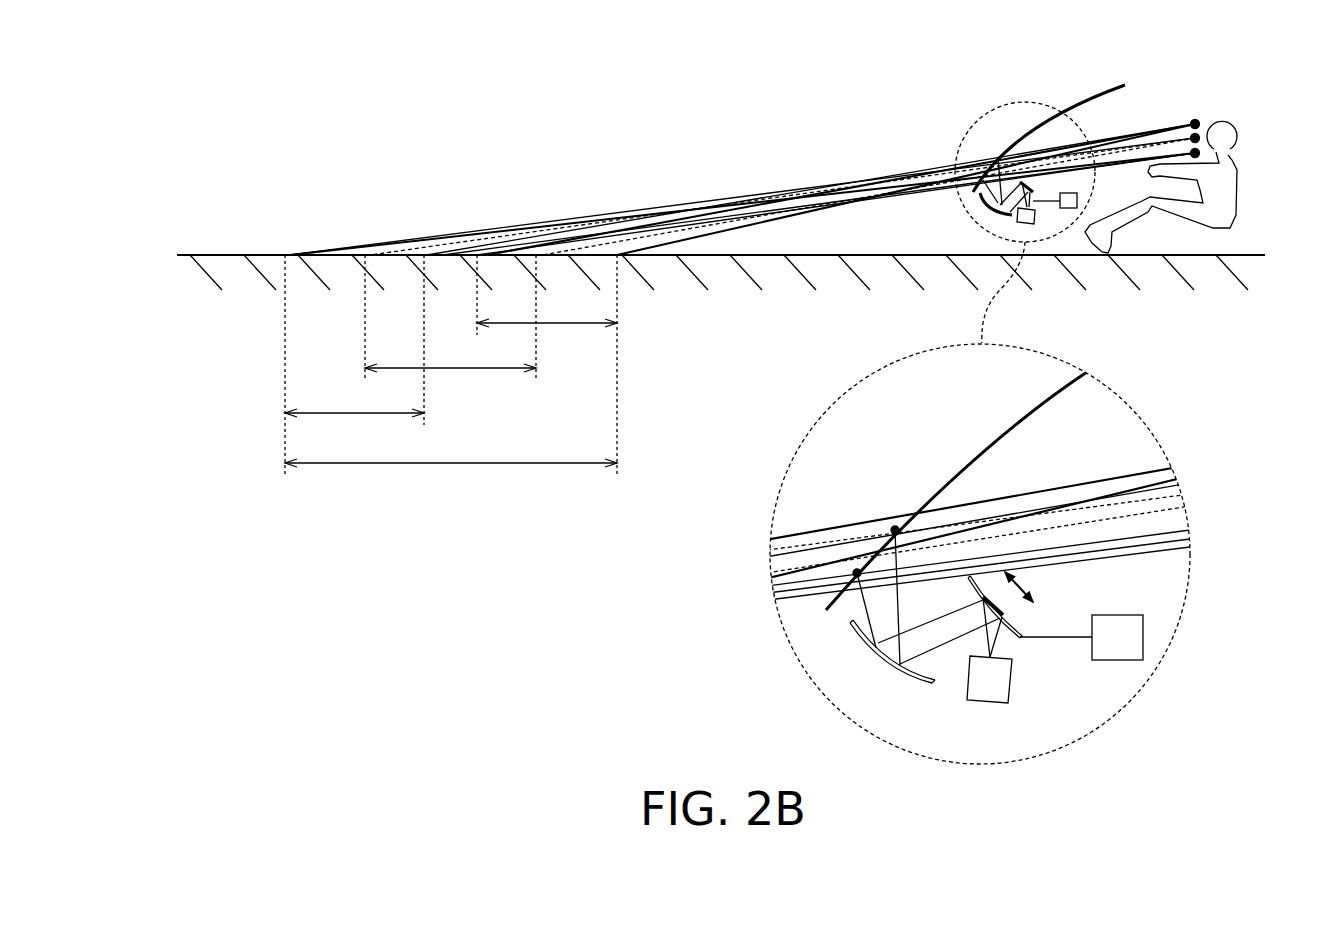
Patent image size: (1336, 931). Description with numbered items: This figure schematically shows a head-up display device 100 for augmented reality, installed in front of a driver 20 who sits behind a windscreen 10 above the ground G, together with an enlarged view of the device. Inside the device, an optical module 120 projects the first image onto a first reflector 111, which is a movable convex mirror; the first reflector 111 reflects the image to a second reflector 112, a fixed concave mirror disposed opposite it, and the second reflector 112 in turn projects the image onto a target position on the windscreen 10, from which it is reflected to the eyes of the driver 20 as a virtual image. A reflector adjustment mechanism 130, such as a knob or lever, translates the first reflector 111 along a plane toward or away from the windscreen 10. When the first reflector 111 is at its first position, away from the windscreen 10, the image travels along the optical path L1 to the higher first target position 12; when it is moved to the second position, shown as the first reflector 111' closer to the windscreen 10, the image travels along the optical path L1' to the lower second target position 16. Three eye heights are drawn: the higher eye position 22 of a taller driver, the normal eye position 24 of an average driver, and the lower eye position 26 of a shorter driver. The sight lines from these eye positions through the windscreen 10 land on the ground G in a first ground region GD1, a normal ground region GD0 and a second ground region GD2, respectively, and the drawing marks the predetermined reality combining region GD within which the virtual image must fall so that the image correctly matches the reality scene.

The windscreen 10 is at (1090, 97).
The first target position 12 is at (893, 528).
The second target position 16 is at (857, 572).
The driver 20 is at (1243, 168).
The higher eye position 22 is at (1195, 124).
The normal eye position 24 is at (1195, 138).
The lower eye position 26 is at (1195, 153).
The head-up display device 100 is at (1230, 411).
The first reflector 111 is at (1038, 607).
The first reflector at second position 111' is at (1045, 577).
The second reflector 112 is at (882, 662).
The optical module 120 is at (972, 692).
The reflector adjustment mechanism 130 is at (1099, 650).
The ground G is at (722, 293).
The reality combining region GD is at (451, 478).
The normal ground region GD0 is at (450, 382).
The first ground region GD1 is at (547, 338).
The second ground region GD2 is at (354, 427).
The optical path L1 is at (939, 673).
The optical path (second position) L1' is at (878, 625).